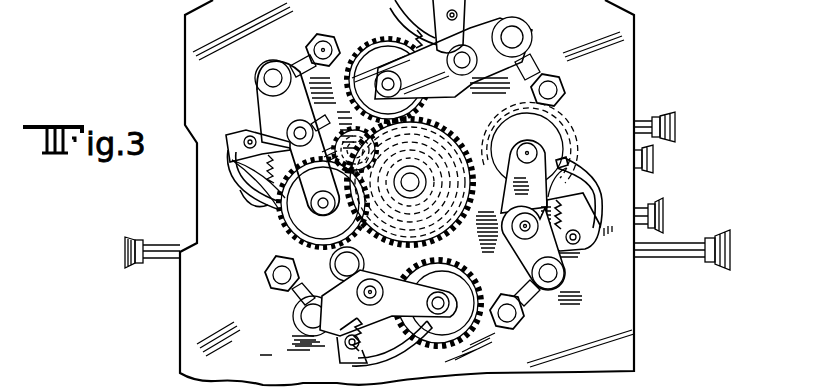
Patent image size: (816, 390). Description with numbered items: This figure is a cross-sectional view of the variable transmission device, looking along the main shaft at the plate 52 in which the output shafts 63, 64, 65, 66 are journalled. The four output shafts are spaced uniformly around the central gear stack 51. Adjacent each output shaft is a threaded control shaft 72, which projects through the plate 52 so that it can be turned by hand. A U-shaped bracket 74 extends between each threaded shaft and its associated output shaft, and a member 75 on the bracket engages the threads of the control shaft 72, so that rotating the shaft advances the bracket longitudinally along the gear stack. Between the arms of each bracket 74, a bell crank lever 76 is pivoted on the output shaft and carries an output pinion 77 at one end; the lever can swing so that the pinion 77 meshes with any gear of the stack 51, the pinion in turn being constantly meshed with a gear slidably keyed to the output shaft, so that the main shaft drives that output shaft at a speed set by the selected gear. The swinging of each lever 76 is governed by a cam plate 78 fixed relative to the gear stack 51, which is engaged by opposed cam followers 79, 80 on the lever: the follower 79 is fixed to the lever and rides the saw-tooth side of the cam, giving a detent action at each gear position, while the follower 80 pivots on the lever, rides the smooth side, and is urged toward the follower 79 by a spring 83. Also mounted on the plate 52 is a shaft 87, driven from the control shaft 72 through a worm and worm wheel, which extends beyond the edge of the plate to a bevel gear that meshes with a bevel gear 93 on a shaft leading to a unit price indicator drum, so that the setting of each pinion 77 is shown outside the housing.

The gear stack 51 is at (437, 148).
The plate 52 is at (615, 70).
The output shaft 63 is at (522, 232).
The output shaft 64 is at (306, 138).
The output shaft 65 is at (380, 296).
The output shaft 66 is at (464, 52).
The threaded control shaft 72 is at (516, 40).
The bracket 74 is at (274, 108).
The member 75 is at (312, 48).
The lever 76 is at (316, 199).
The output pinion 77 is at (547, 138).
The cam plate 78 is at (252, 192).
The cam follower 79 is at (225, 150).
The cam follower 80 is at (262, 210).
The spring 83 is at (248, 170).
The shaft 87 is at (641, 117).
The bevel gear 93 is at (722, 240).